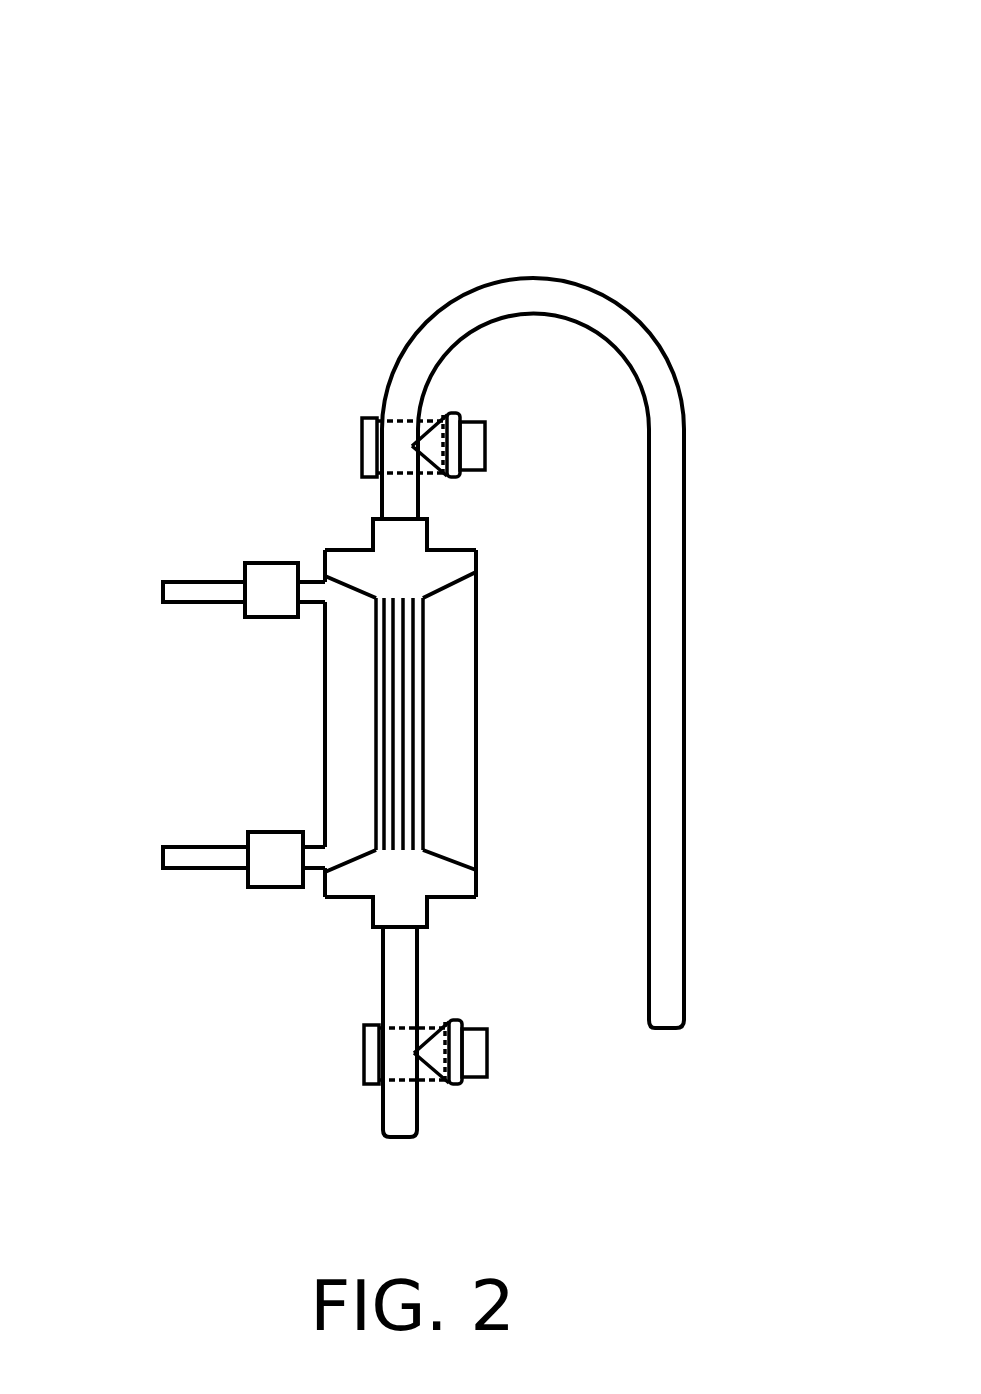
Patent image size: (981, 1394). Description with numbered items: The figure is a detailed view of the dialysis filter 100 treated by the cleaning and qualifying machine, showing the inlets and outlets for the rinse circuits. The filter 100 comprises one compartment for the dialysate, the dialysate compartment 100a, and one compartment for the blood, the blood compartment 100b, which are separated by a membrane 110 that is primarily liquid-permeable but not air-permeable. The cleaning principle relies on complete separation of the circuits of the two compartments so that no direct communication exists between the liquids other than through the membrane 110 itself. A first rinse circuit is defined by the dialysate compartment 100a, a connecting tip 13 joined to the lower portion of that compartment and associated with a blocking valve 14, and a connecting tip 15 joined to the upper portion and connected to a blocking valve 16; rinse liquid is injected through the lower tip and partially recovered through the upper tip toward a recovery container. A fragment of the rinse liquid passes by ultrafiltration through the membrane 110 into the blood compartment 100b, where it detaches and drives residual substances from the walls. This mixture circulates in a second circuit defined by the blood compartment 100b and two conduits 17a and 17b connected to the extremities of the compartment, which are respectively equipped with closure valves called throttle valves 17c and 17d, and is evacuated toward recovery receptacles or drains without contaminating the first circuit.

The dialysis filter 100 is at (578, 210).
The dialysate compartment 100a is at (337, 752).
The blood compartment 100b is at (383, 573).
The membrane 110 is at (398, 718).
The connecting tip 13 is at (180, 862).
The blocking valve 14 is at (270, 853).
The connecting tip 15 is at (185, 590).
The blocking valve 16 is at (263, 600).
The conduit 17a is at (410, 363).
The conduit 17b is at (398, 985).
The throttle valve 17c is at (468, 1080).
The throttle valve 17d is at (486, 440).